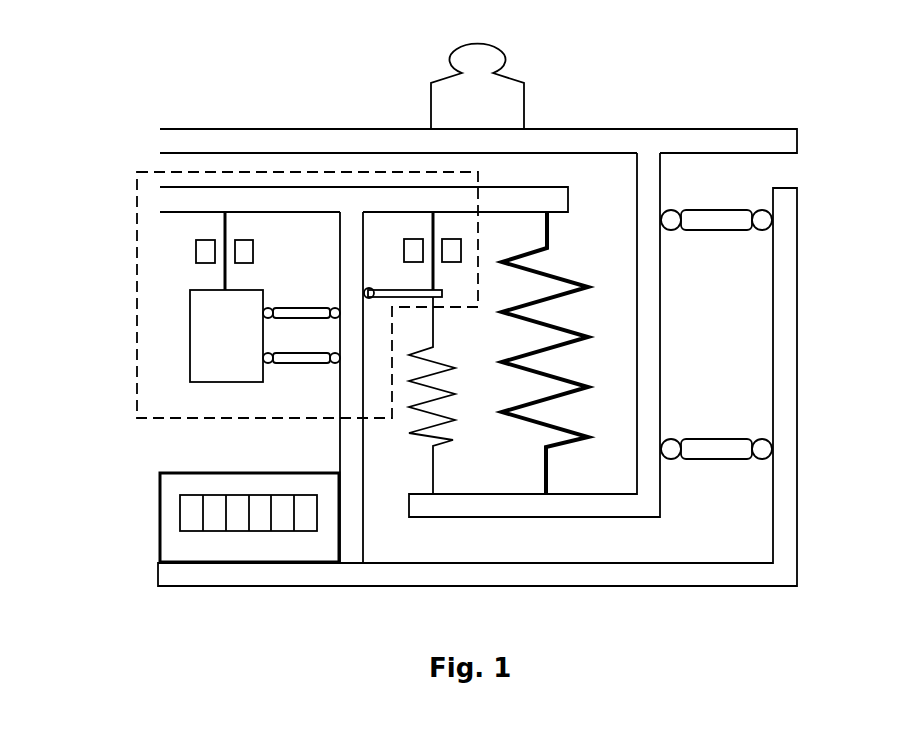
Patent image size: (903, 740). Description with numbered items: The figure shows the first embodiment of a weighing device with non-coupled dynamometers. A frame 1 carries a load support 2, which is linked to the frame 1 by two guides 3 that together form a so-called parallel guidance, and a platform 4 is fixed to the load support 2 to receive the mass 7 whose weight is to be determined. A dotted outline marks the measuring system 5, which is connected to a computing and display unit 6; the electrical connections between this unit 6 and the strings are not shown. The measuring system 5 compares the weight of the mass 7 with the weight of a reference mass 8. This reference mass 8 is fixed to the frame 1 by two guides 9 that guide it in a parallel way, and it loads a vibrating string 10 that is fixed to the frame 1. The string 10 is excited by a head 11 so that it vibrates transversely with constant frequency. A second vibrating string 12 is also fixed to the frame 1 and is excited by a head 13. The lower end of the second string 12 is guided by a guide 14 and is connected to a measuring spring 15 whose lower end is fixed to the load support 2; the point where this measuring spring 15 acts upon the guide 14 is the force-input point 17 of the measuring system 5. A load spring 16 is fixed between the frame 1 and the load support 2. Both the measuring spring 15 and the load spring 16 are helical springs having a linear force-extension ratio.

The frame 1 is at (786, 384).
The load support 2 is at (647, 324).
The guides 3 is at (718, 448).
The platform 4 is at (663, 135).
The measuring system 5 is at (158, 398).
The computing and display unit 6 is at (174, 508).
The mass 7 is at (507, 92).
The reference mass 8 is at (208, 317).
The guides 9 is at (296, 316).
The vibrating string 10 is at (228, 268).
The head 11 is at (246, 248).
The second vibrating string 12 is at (436, 275).
The head 13 is at (448, 246).
The guide 14 is at (416, 292).
The measuring spring 15 is at (447, 374).
The load spring 16 is at (560, 372).
The force-input point 17 is at (432, 298).